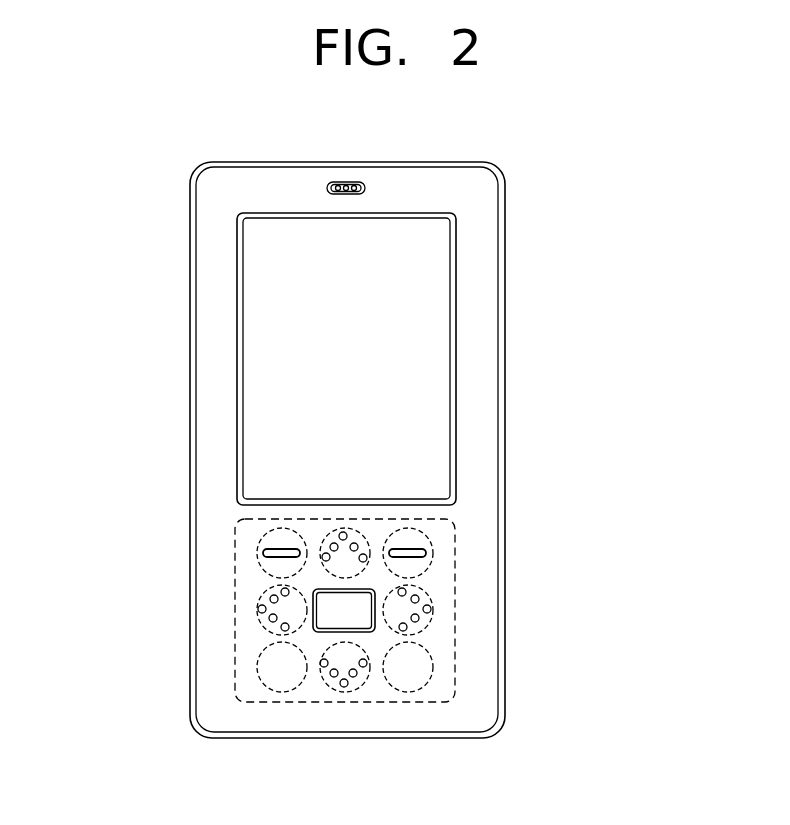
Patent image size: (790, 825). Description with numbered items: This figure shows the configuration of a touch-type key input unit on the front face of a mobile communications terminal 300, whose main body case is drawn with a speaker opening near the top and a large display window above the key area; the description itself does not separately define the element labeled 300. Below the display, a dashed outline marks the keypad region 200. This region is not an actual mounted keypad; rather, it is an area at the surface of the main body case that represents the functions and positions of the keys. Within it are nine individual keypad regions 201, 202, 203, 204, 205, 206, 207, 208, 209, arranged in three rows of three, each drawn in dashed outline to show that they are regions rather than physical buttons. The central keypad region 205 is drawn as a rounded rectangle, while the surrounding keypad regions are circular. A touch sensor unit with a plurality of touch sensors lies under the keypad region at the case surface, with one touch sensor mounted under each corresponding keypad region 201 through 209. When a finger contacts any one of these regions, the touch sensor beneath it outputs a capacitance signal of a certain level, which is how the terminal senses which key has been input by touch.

The keypad region 200 is at (456, 581).
The keypad region 201 is at (257, 553).
The keypad region 202 is at (323, 537).
The keypad region 203 is at (433, 553).
The keypad region 204 is at (257, 610).
The keypad region 205 is at (318, 632).
The keypad region 206 is at (433, 610).
The keypad region 207 is at (257, 667).
The keypad region 208 is at (343, 692).
The keypad region 209 is at (433, 667).
The mobile terminal 300 is at (472, 699).